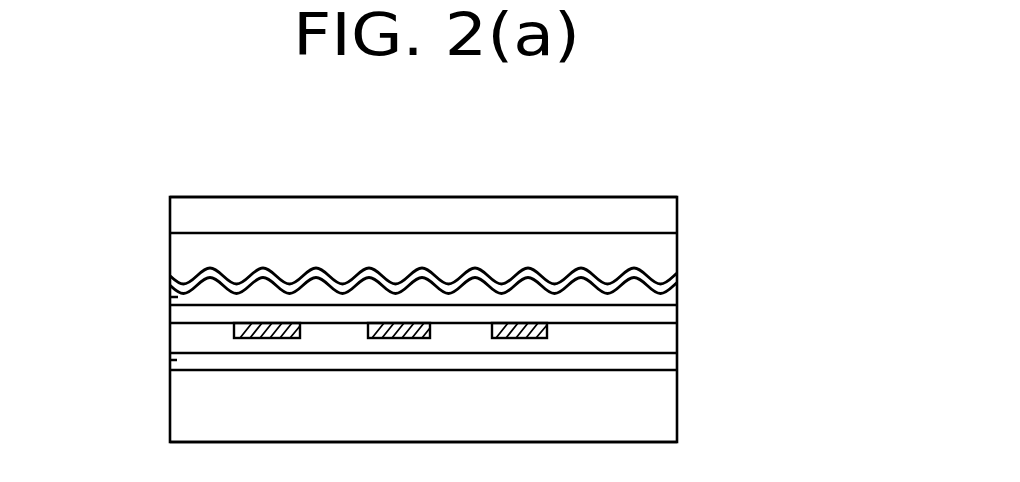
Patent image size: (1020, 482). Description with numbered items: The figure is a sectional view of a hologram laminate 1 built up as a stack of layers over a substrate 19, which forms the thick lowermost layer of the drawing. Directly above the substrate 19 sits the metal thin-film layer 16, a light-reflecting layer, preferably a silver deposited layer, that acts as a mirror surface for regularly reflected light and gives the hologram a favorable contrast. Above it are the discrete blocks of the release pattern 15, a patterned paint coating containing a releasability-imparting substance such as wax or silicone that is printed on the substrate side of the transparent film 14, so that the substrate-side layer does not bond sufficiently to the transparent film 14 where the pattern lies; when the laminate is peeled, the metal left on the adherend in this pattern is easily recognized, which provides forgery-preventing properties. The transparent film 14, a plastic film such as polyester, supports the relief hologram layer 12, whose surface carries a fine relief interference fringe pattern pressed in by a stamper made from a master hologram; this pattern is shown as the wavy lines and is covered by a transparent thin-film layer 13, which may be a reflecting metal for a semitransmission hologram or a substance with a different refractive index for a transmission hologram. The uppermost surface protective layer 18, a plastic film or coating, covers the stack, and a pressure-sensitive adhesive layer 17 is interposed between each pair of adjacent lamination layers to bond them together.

The hologram laminate 1 is at (606, 147).
The relief hologram layer 12 is at (667, 250).
The transparent thin-film layer 13 is at (667, 287).
The transparent film 14 is at (667, 315).
The release pattern 15 is at (547, 331).
The metal thin-film layer 16 is at (655, 354).
The pressure-sensitive adhesive layer 17 is at (170, 293).
The surface protective layer 18 is at (667, 211).
The substrate 19 is at (667, 415).